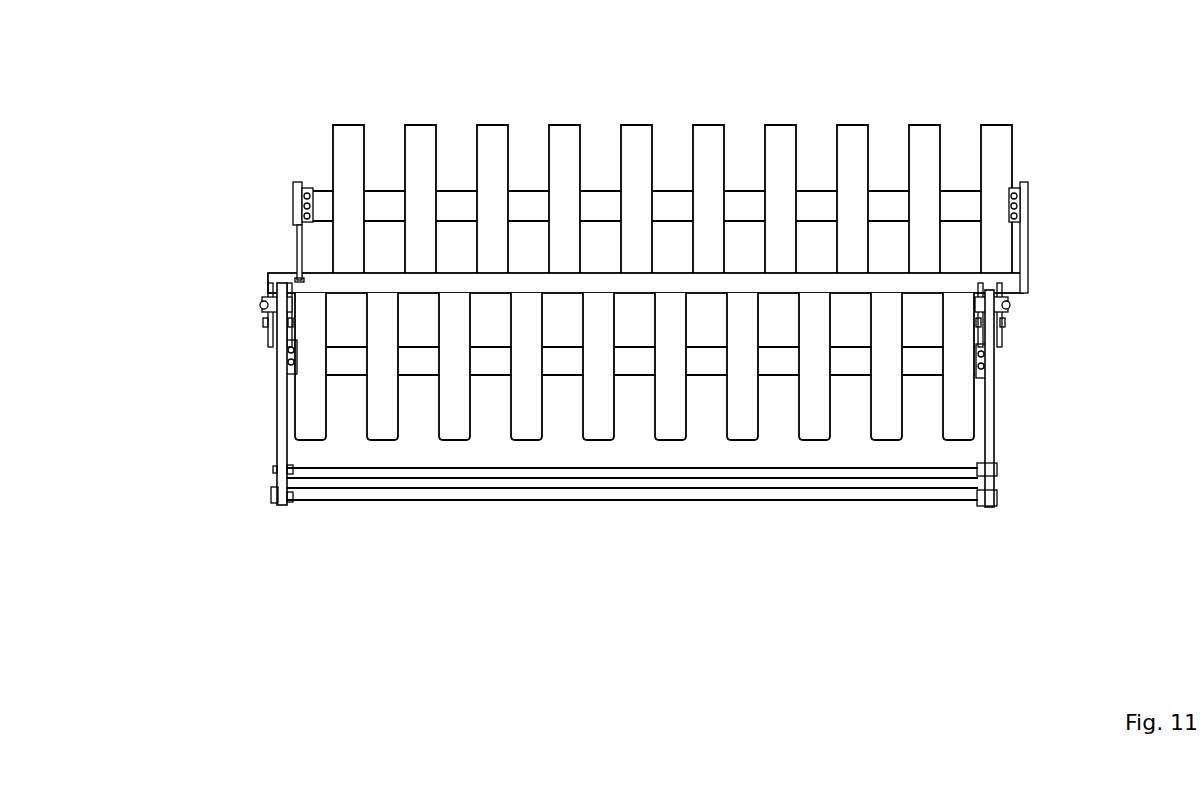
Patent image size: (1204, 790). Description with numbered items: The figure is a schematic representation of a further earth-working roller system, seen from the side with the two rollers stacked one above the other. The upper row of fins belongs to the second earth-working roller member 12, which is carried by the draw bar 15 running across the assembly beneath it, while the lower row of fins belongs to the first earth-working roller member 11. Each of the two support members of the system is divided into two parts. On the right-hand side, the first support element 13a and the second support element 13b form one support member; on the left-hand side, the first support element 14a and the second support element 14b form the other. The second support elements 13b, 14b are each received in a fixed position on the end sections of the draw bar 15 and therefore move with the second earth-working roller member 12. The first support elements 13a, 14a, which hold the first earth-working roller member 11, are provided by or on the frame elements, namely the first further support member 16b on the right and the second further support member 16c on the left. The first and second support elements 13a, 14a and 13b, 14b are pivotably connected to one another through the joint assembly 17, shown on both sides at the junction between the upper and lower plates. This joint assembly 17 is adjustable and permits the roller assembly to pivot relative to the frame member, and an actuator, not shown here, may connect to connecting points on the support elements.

The first earth-working roller member 11 is at (672, 430).
The second earth-working roller member 12 is at (497, 132).
The first support element 13a is at (993, 407).
The second support element 13b is at (1022, 248).
The first support element 14a is at (287, 415).
The second support element 14b is at (297, 228).
The draw bar 15 is at (672, 288).
The first further support member 16b is at (995, 450).
The second further support member 16c is at (273, 470).
The joint assembly 17 is at (263, 305).